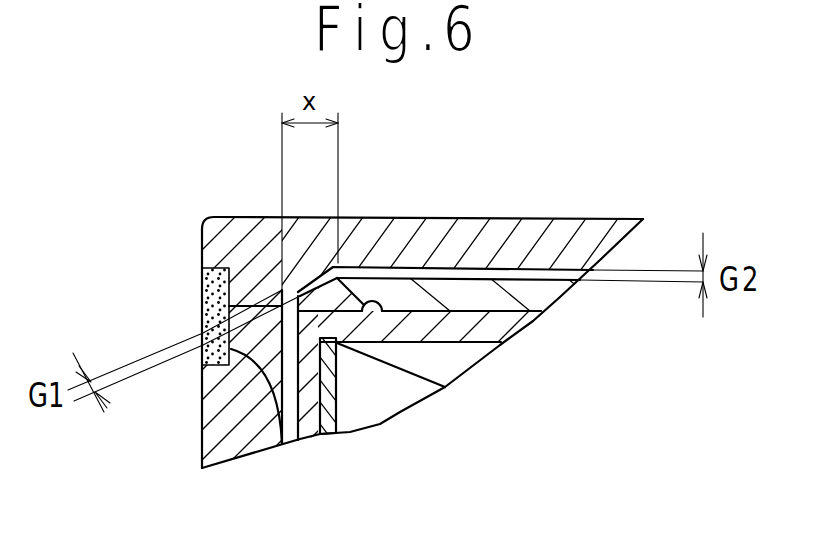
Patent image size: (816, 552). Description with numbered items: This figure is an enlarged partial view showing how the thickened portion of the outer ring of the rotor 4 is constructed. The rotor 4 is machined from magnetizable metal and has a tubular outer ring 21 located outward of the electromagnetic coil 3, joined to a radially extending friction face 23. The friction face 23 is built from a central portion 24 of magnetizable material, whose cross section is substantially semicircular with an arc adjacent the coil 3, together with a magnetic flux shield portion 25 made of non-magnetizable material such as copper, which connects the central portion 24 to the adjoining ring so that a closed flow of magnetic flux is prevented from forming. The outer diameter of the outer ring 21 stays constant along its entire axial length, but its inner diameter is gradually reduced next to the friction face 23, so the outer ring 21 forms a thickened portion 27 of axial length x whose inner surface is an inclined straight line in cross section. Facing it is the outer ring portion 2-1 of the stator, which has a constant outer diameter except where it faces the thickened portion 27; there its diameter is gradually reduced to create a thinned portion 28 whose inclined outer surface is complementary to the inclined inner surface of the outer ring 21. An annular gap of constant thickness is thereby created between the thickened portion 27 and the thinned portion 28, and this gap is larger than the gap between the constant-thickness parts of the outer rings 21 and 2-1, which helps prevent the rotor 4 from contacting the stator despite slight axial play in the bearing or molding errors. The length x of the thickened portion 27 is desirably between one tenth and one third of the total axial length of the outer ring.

The rotor 4 is at (243, 217).
The outer ring 21 is at (500, 241).
The friction face 23 is at (200, 440).
The central portion 24 is at (228, 442).
The magnetic flux shield portion 25 is at (260, 342).
The thickened portion 27 is at (303, 284).
The thinned portion 28 is at (329, 272).
The electromagnetic coil 3 is at (457, 360).
The outer ring portion of the stator 2-1 is at (530, 293).